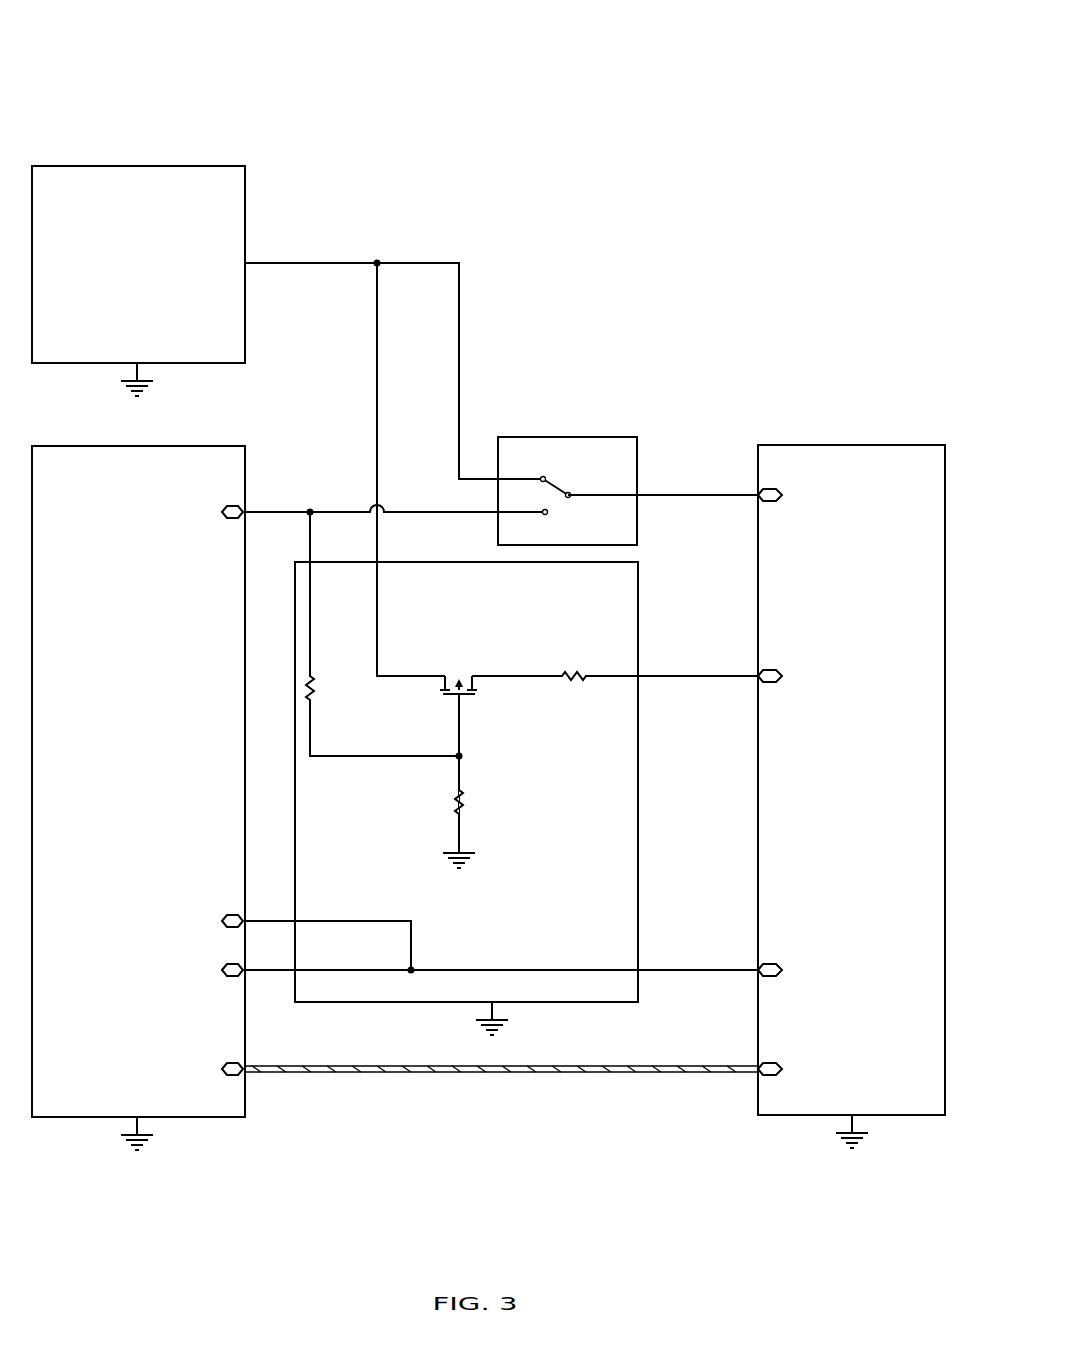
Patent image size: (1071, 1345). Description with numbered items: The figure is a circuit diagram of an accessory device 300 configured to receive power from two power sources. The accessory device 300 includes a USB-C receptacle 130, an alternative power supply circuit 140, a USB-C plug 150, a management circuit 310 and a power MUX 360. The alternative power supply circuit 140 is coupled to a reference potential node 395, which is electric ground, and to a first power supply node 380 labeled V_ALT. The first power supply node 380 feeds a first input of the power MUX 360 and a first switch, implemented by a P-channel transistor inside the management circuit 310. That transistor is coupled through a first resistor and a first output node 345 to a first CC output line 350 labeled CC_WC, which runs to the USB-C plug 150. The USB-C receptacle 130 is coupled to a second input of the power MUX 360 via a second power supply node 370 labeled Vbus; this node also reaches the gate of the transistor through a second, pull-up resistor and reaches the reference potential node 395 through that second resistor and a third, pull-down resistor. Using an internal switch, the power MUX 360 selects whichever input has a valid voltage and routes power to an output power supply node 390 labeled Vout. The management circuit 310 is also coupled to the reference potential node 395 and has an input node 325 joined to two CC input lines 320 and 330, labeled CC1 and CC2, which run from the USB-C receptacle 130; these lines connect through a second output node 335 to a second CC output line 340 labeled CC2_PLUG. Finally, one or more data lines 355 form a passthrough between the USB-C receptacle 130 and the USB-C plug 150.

The accessory device 300 is at (123, 45).
The alternative power supply circuit 140 is at (72, 364).
The first power supply node 380 is at (378, 265).
The second power supply node 370 is at (313, 514).
The power MUX 360 is at (498, 530).
The output power supply node 390 is at (751, 498).
The management circuit 310 is at (353, 1003).
The first output node 345 is at (635, 679).
The first CC output line 350 is at (751, 680).
The CC input line 320 is at (273, 919).
The input node 325 is at (413, 967).
The CC input line 330 is at (270, 975).
The second output node 335 is at (635, 975).
The second CC output line 340 is at (751, 976).
The data lines 355 is at (505, 1073).
The USB-C receptacle 130 is at (72, 1118).
The USB-C plug 150 is at (778, 1117).
The reference potential node 395 is at (155, 383).